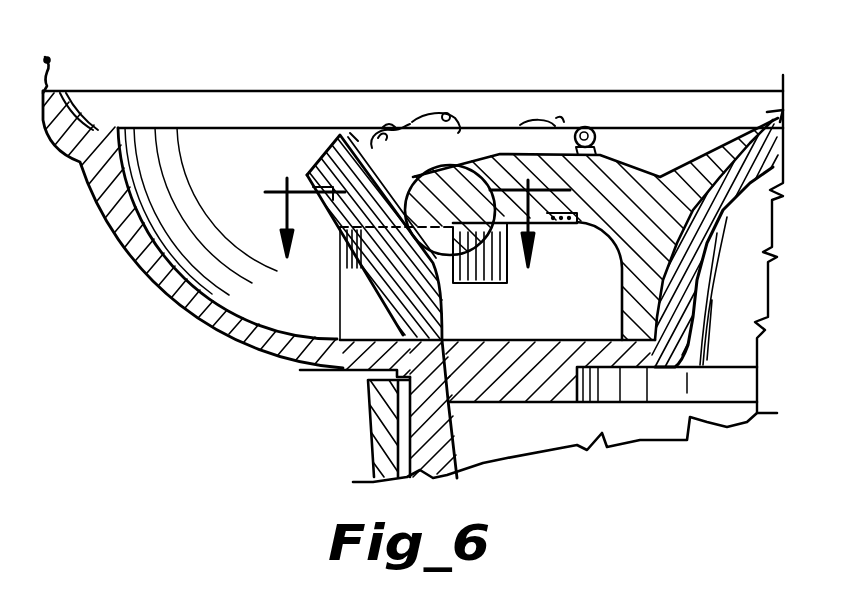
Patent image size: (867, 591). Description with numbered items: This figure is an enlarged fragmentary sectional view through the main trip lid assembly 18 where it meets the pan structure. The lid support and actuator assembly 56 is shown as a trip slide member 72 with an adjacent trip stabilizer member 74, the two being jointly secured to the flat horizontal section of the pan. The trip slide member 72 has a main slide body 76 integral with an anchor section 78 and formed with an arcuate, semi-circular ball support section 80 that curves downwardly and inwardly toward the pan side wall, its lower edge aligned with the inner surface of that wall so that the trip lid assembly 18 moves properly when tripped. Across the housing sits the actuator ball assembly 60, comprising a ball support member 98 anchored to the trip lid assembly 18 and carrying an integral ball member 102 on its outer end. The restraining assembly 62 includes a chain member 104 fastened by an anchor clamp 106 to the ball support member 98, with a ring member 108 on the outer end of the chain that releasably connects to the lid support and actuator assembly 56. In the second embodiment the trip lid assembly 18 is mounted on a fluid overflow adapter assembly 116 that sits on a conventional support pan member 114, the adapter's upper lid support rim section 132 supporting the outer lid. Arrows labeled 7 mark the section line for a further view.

The section line 7- 7 is at (411, 237).
The main trip lid assembly 18 is at (703, 280).
The lid support and actuator assembly 56 is at (378, 285).
The actuator ball assembly 60 is at (652, 172).
The restraining assembly 62 is at (577, 127).
The trip slide member 72 is at (313, 147).
The trip stabilizer member 74 is at (490, 222).
The main slide body 76 is at (400, 281).
The anchor section 78 is at (340, 366).
The ball support section 80 is at (357, 140).
The ball support member 98 is at (700, 185).
The ball member 102 is at (447, 165).
The chain member 104 is at (383, 127).
The anchor clamp 106 is at (560, 155).
The ring member 108 is at (307, 177).
The conventional support pan member 114 is at (365, 438).
The fluid overflow adapter assembly 116 is at (107, 240).
The upper lid support rim section 132 is at (110, 130).